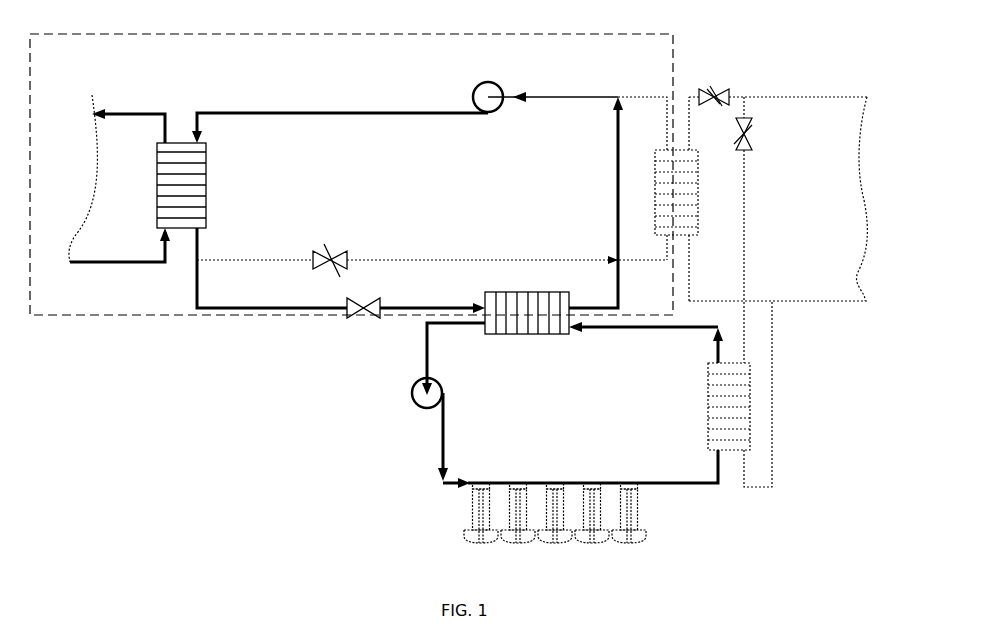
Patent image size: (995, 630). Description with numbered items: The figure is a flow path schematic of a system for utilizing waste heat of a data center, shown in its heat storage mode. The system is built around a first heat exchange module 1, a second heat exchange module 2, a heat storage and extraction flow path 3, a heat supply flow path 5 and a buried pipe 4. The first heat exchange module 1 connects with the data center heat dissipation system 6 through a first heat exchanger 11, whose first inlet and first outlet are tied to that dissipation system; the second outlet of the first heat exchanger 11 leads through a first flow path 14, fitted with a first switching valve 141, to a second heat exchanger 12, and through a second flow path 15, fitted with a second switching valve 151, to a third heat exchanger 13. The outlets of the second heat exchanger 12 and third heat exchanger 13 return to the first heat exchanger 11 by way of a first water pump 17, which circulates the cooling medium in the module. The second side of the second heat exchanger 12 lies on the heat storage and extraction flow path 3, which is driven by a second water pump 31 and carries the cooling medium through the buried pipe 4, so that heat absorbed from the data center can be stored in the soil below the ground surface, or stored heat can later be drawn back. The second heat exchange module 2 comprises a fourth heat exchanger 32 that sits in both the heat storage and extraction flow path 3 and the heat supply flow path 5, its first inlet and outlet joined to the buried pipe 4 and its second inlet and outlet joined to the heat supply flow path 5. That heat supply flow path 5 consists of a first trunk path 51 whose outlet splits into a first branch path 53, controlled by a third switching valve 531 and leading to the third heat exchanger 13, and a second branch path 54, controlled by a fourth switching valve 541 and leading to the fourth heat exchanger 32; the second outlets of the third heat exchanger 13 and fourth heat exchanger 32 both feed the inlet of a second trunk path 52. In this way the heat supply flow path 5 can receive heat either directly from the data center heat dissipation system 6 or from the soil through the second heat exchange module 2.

The first heat exchange module 1 is at (425, 34).
The second heat exchange module 2 is at (693, 406).
The fourth heat exchanger 32 is at (708, 412).
The heat storage and extraction flow path 3 is at (427, 352).
The second water pump 31 is at (412, 386).
The buried pipe 4 is at (473, 543).
The heat supply flow path 5 is at (742, 272).
The first trunk path 51 is at (788, 97).
The second trunk path 52 is at (792, 301).
The first branch path 53 is at (731, 97).
The third switching valve 531 is at (704, 91).
The second branch path 54 is at (746, 204).
The fourth switching valve 541 is at (751, 128).
The data center heat dissipation system 6 is at (132, 262).
The first heat exchanger 11 is at (157, 188).
The second heat exchanger 12 is at (526, 292).
The third heat exchanger 13 is at (655, 193).
The first flow path 14 is at (259, 308).
The first switching valve 141 is at (350, 302).
The second flow path 15 is at (260, 260).
The second switching valve 151 is at (318, 256).
The first water pump 17 is at (478, 87).